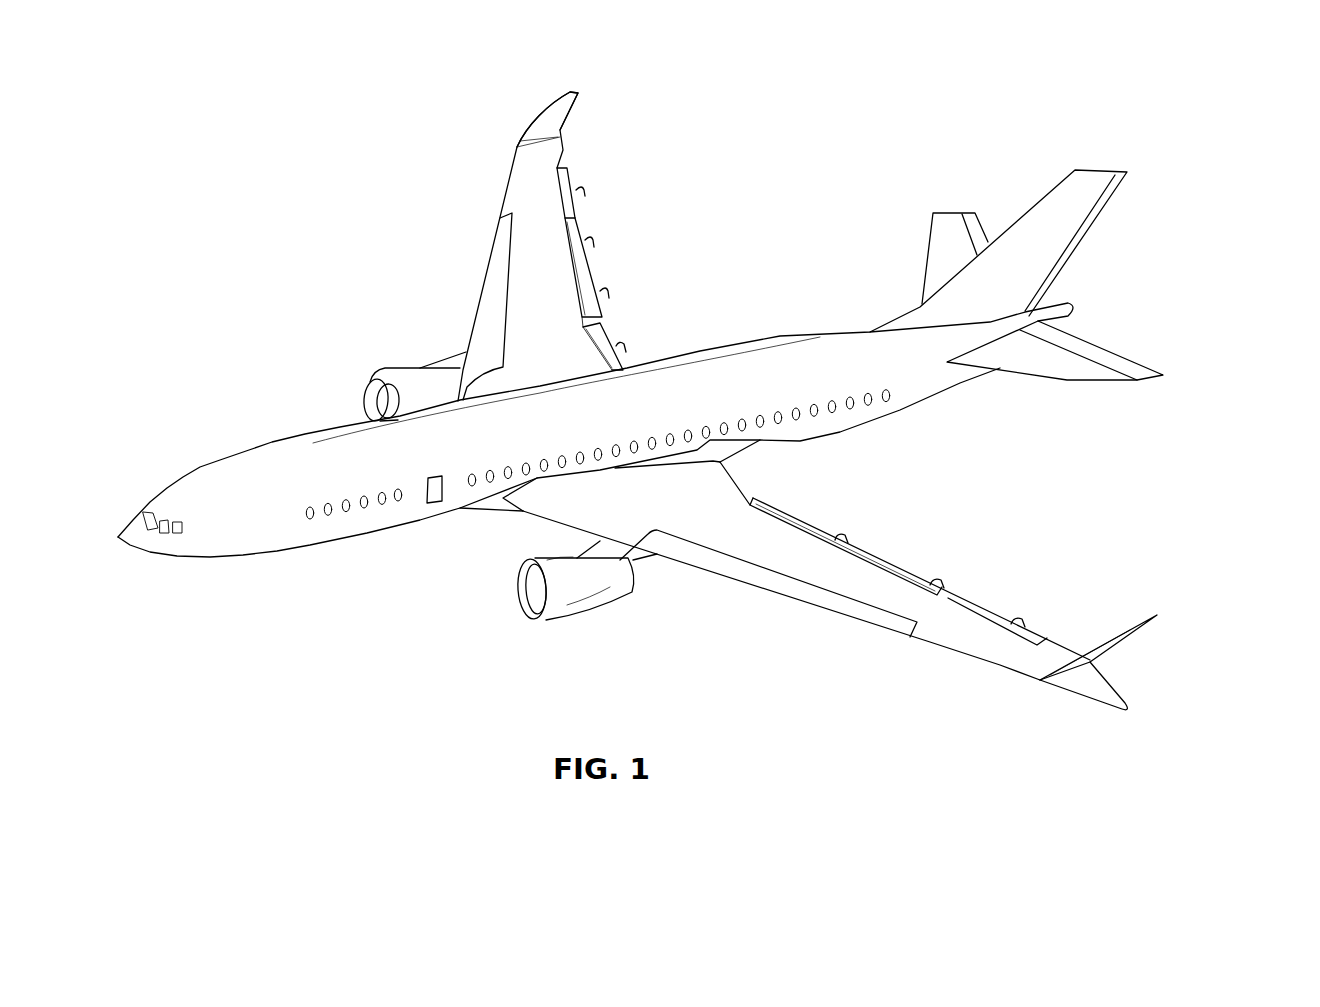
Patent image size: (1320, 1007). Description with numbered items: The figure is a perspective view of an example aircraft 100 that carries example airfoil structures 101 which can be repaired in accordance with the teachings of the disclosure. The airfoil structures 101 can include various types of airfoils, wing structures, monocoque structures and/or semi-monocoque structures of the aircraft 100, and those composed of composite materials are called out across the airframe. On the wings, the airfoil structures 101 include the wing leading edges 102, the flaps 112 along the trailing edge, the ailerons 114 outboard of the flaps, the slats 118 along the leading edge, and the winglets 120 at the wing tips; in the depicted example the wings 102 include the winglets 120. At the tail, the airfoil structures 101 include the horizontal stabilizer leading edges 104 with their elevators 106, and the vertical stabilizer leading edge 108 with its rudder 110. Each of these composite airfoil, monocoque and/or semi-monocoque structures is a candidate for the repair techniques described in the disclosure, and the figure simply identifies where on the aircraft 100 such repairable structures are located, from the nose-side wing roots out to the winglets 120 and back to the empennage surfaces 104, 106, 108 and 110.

The aircraft 100 is at (205, 191).
The airfoil structures 101 is at (435, 172).
The wing leading edge 102 is at (565, 152).
The horizontal stabilizer leading edge 104 is at (928, 248).
The elevator 106 is at (977, 230).
The vertical stabilizer leading edge 108 is at (1058, 181).
The rudder 110 is at (1089, 227).
The flap 112 is at (605, 340).
The aileron 114 is at (569, 196).
The slat 118 is at (492, 268).
The winglet 120 is at (538, 111).